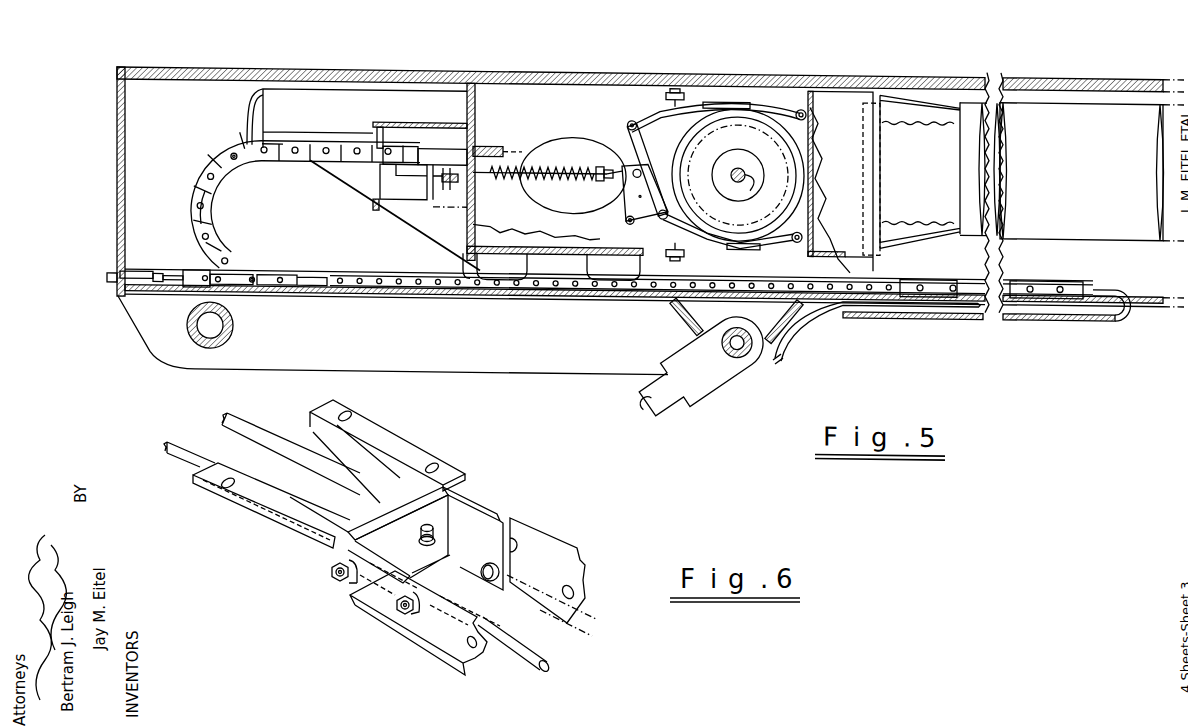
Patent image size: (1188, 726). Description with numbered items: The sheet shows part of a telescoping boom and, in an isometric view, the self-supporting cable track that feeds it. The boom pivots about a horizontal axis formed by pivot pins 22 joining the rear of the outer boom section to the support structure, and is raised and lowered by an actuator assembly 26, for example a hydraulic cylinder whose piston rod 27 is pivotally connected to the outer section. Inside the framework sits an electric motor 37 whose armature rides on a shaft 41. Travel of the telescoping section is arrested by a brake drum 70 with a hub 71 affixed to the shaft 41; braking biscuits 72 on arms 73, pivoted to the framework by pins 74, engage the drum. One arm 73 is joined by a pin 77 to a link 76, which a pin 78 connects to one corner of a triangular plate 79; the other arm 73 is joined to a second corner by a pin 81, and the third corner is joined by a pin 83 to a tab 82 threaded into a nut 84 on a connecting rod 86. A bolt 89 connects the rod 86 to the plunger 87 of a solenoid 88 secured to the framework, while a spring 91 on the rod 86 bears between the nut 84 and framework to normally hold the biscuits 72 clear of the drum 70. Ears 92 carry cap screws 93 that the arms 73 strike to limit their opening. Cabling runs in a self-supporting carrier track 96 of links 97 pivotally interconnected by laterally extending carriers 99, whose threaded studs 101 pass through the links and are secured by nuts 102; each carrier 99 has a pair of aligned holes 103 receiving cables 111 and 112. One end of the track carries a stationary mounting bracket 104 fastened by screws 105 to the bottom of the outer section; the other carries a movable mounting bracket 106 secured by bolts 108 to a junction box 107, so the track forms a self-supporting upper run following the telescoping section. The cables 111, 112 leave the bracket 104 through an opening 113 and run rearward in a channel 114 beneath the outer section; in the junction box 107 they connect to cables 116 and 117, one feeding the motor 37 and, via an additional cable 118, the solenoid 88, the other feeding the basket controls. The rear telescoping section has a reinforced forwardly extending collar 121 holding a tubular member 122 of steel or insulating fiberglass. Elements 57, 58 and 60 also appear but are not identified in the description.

In FIG. 5, the pivot pins 22 is at (212, 324).
In FIG. 5, the actuator assembly 26 is at (692, 409).
In FIG. 5, the piston rod 27 is at (642, 381).
In FIG. 5, the electric motor 37 is at (796, 173).
In FIG. 5, the shaft 41 is at (751, 178).
In FIG. 5, the cable 57 is at (538, 226).
In FIG. 5, the push rod 58 is at (163, 257).
In FIG. 5, the boom section 60 is at (109, 273).
In FIG. 5, the brake drum 70 is at (804, 157).
In FIG. 5, the hub 71 is at (755, 158).
In FIG. 5, the braking shoes or biscuits 72 is at (738, 95).
In FIG. 5, the arms 73 is at (782, 95).
In FIG. 5, the pins 74 is at (803, 90).
In FIG. 5, the link 76 is at (630, 116).
In FIG. 5, the pin 77 is at (633, 116).
In FIG. 5, the pin 78 is at (638, 215).
In FIG. 5, the triangularly-shaped plate 79 is at (643, 191).
In FIG. 5, the pin 81 is at (631, 218).
In FIG. 5, the tab or extension 82 is at (623, 180).
In FIG. 5, the pin 83 is at (634, 165).
In FIG. 5, the nut 84 is at (598, 176).
In FIG. 5, the connecting rod 86 is at (526, 176).
In FIG. 5, the plunger 87 is at (433, 198).
In FIG. 5, the solenoid 88 is at (380, 180).
In FIG. 5, the bolt 89 is at (450, 190).
In FIG. 5, the spring 91 is at (549, 162).
In FIG. 5, the ears 92 is at (684, 86).
In FIG. 5, the cap screws 93 is at (668, 84).
In FIG. 5, the self-supporting carrier track 96 is at (182, 186).
In FIG. 6, the self-supporting carrier track 96 is at (495, 460).
In FIG. 5, the links 97 is at (190, 215).
In FIG. 6, the links 97 is at (493, 513).
In FIG. 6, the carriers 99 is at (406, 536).
In FIG. 5, the threaded studs 101 is at (262, 150).
In FIG. 6, the threaded studs 101 is at (400, 610).
In FIG. 6, the nuts 102 is at (332, 571).
In FIG. 6, the holes 103 is at (538, 624).
In FIG. 5, the stationary mounting bracket 104 is at (1068, 266).
In FIG. 5, the screws 105 is at (1066, 268).
In FIG. 5, the movable mounting bracket 106 is at (404, 139).
In FIG. 6, the movable mounting bracket 106 is at (407, 453).
In FIG. 5, the junction box 107 is at (455, 145).
In FIG. 5, the bolts 108 is at (418, 168).
In FIG. 5, the cable 111 is at (777, 352).
In FIG. 6, the cable 111 is at (190, 437).
In FIG. 5, the cable 112 is at (310, 273).
In FIG. 6, the cable 112 is at (267, 437).
In FIG. 5, the opening 113 is at (1089, 309).
In FIG. 5, the channel 114 is at (957, 310).
In FIG. 5, the cable 116 is at (490, 142).
In FIG. 5, the cable 117 is at (526, 133).
In FIG. 5, the additional cable 118 is at (500, 245).
In FIG. 5, the reinforced forwardly extending collar 121 is at (933, 107).
In FIG. 5, the tubular member 122 is at (1057, 101).